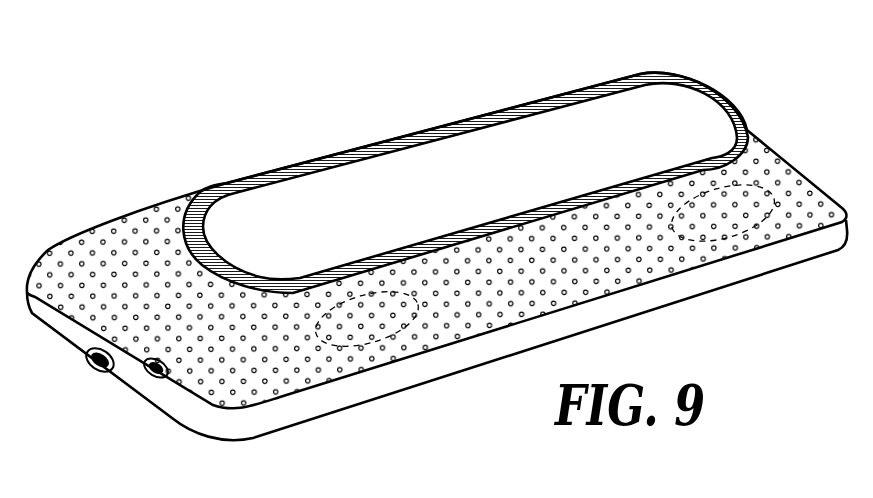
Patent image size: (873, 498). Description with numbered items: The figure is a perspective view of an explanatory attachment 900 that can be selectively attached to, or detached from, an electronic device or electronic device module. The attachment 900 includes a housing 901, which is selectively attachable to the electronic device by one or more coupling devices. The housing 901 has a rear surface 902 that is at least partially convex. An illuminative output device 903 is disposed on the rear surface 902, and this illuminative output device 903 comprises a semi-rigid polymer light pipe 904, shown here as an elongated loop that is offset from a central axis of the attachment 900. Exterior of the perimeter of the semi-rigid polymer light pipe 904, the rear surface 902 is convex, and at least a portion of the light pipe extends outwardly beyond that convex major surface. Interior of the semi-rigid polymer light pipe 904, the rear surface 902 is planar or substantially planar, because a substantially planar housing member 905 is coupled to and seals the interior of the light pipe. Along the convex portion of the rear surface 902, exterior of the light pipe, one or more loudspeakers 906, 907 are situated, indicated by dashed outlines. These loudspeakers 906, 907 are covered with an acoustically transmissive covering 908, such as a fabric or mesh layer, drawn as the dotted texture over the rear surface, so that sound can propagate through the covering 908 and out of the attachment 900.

The attachment 900 is at (437, 250).
The housing 901 is at (325, 400).
The rear surface 902 is at (220, 352).
The illuminative output device 903 is at (465, 160).
The semi-rigid polymer light pipe 904 is at (482, 120).
The substantially planar housing member 905 is at (570, 127).
The loudspeaker 906 is at (405, 325).
The loudspeaker 907 is at (740, 227).
The acoustically transmissive covering 908 is at (106, 245).